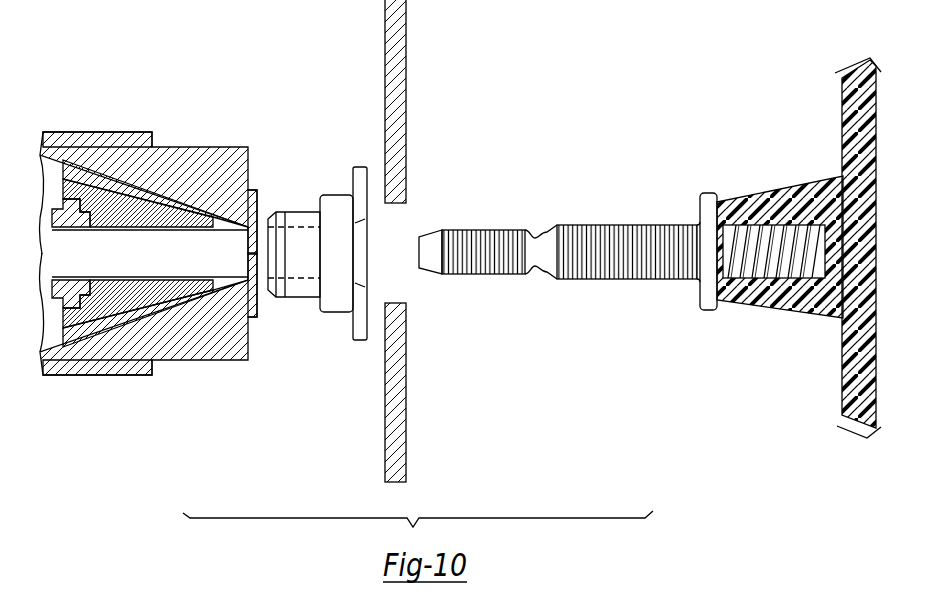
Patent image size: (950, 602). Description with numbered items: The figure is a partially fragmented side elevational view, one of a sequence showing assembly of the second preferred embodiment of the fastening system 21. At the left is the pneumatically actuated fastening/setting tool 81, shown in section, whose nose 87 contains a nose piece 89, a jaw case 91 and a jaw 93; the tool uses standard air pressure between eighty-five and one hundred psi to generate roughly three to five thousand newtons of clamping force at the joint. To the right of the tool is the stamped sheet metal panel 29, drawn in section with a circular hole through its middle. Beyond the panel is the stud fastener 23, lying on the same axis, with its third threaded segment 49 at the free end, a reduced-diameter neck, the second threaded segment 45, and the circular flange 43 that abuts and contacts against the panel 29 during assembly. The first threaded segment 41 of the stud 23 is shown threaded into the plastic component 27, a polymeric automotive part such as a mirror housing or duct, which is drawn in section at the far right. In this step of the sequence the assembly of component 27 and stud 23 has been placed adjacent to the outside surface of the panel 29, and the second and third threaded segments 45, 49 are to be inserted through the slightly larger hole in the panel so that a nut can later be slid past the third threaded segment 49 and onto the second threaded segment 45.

The fastening system 21 is at (88, 86).
The stud fastener 23 is at (623, 238).
The plastic component 27 is at (848, 349).
The panel 29 is at (396, 76).
The first threaded segment 41 is at (820, 182).
The circular flange 43 is at (707, 193).
The second threaded segment 45 is at (607, 279).
The third threaded segment 49 is at (468, 236).
The fastening/setting tool 81 is at (181, 74).
The nose 87 is at (137, 376).
The nose piece 89 is at (259, 172).
The jaw case 91 is at (209, 174).
The jaw 93 is at (122, 192).